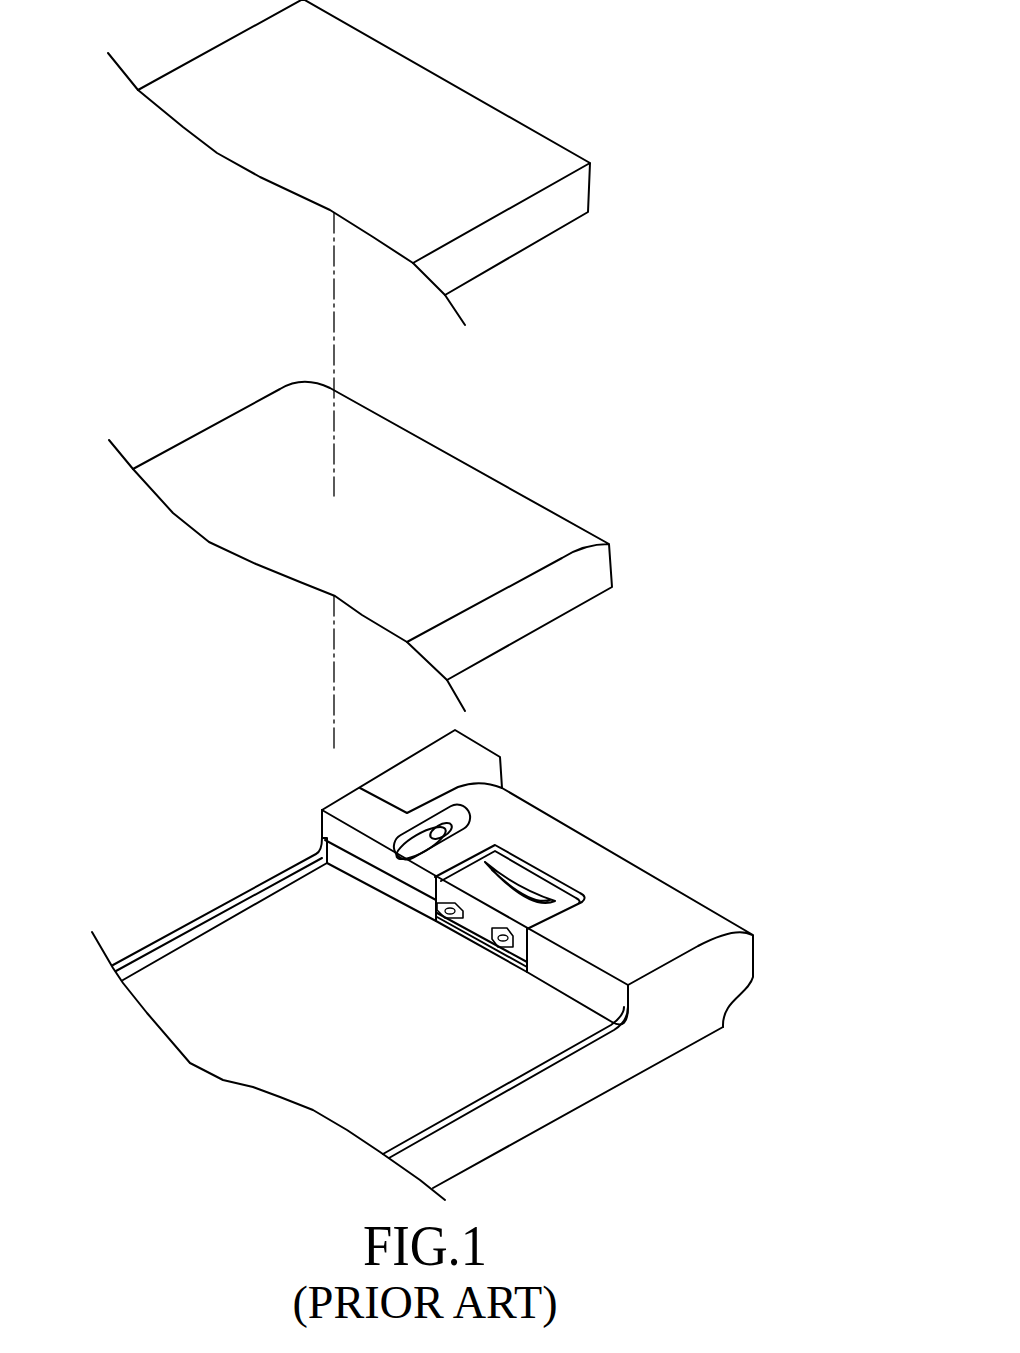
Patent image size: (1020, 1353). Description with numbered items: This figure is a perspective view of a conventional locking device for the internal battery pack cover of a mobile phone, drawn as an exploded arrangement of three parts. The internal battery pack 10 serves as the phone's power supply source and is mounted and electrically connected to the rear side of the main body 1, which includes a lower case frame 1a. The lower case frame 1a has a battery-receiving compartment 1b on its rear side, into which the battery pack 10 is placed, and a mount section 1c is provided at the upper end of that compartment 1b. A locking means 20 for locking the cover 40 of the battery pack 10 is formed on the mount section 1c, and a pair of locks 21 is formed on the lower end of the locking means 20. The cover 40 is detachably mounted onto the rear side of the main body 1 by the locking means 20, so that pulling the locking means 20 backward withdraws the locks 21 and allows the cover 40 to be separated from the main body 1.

The main body 1 is at (679, 1066).
The lower case frame 1a is at (628, 895).
The battery-receiving compartment 1b is at (463, 1080).
The mount section 1c is at (518, 857).
The internal battery pack 10 is at (631, 542).
The locking means 20 is at (560, 869).
The locks 21 is at (495, 941).
The cover 40 is at (517, 70).